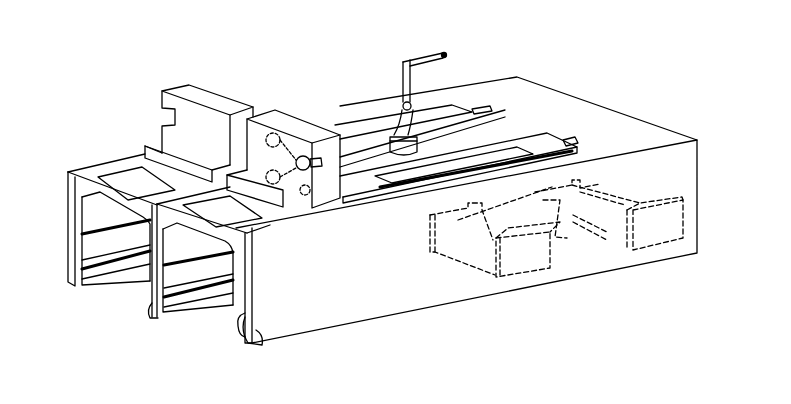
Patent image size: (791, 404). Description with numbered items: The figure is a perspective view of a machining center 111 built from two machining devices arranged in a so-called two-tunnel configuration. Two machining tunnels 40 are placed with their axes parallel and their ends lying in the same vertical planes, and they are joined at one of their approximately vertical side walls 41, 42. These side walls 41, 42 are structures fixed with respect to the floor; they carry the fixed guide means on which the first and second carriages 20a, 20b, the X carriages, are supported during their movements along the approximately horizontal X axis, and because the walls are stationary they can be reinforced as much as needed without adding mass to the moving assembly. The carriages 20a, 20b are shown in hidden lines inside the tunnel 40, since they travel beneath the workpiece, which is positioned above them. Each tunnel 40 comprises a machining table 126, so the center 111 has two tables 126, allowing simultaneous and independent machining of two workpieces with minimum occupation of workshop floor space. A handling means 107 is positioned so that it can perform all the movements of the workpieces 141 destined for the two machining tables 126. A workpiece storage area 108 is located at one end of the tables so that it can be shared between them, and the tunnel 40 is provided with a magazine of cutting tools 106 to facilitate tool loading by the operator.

The machining center 111 is at (155, 52).
The machining tunnel 40 is at (571, 94).
The side wall 41 is at (72, 248).
The side wall 42 is at (150, 282).
The magazine of cutting tools 106 is at (283, 118).
The handling means 107 is at (434, 53).
The workpiece storage area 108 is at (128, 179).
The machining table 126 is at (368, 136).
The workpiece 141 is at (380, 195).
The first carriage 20a is at (538, 262).
The second carriage 20b is at (658, 228).